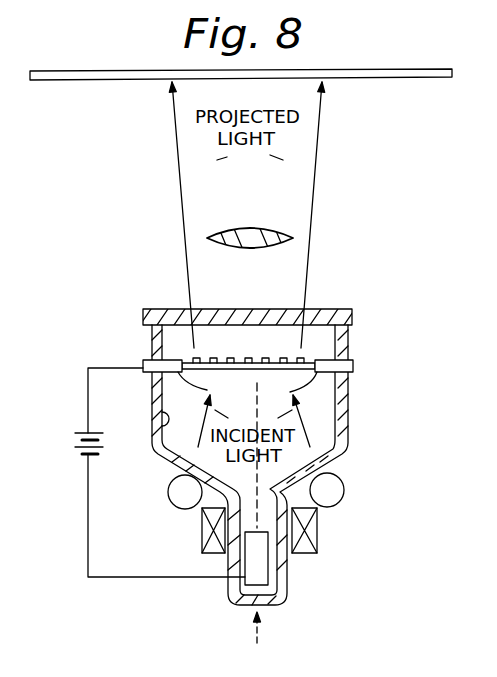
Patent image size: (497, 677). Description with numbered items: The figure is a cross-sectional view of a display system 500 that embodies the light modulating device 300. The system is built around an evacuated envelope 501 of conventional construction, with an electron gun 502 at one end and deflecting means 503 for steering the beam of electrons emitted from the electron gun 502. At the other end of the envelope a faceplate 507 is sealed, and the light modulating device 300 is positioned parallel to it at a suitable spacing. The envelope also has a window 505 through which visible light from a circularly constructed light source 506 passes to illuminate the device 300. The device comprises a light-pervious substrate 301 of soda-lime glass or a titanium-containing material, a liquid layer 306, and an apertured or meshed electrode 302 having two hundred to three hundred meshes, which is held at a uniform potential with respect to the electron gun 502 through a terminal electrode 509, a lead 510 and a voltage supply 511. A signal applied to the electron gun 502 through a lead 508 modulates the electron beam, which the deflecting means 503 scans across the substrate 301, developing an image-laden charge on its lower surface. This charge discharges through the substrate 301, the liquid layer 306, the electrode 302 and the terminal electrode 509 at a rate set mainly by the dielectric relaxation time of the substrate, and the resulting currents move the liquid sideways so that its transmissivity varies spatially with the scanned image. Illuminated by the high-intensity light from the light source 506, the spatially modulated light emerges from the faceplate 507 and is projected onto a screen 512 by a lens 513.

The light modulating device 300 is at (176, 343).
The light-pervious substrate 301 is at (163, 390).
The electrode 302 is at (247, 360).
The liquid layer 306 is at (273, 360).
The display system 500 is at (127, 273).
The evacuated envelope 501 is at (348, 418).
The electron gun 502 is at (270, 567).
The deflecting means 503 is at (317, 552).
The window 505 is at (158, 438).
The light source 506 is at (343, 500).
The faceplate 507 is at (352, 309).
The lead 508 is at (258, 630).
The terminal electrode 509 is at (143, 362).
The lead 510 is at (88, 418).
The voltage supply 511 is at (82, 455).
The screen 512 is at (407, 80).
The lens 513 is at (288, 234).